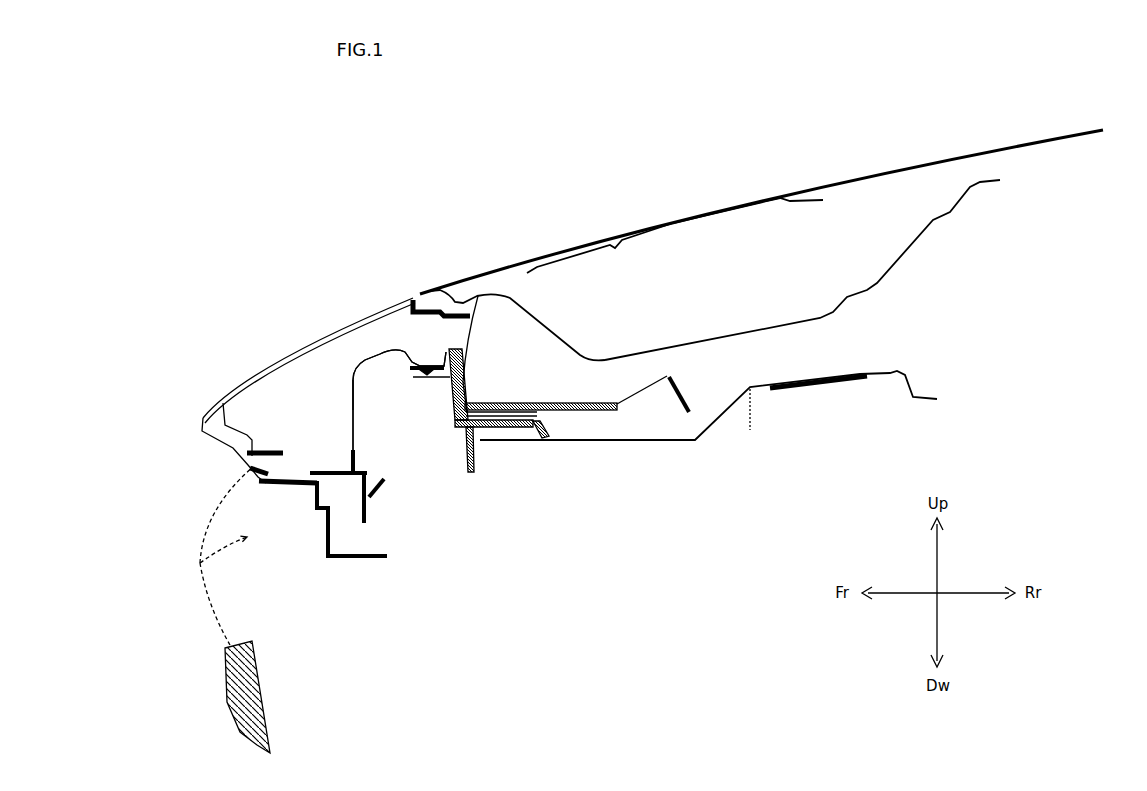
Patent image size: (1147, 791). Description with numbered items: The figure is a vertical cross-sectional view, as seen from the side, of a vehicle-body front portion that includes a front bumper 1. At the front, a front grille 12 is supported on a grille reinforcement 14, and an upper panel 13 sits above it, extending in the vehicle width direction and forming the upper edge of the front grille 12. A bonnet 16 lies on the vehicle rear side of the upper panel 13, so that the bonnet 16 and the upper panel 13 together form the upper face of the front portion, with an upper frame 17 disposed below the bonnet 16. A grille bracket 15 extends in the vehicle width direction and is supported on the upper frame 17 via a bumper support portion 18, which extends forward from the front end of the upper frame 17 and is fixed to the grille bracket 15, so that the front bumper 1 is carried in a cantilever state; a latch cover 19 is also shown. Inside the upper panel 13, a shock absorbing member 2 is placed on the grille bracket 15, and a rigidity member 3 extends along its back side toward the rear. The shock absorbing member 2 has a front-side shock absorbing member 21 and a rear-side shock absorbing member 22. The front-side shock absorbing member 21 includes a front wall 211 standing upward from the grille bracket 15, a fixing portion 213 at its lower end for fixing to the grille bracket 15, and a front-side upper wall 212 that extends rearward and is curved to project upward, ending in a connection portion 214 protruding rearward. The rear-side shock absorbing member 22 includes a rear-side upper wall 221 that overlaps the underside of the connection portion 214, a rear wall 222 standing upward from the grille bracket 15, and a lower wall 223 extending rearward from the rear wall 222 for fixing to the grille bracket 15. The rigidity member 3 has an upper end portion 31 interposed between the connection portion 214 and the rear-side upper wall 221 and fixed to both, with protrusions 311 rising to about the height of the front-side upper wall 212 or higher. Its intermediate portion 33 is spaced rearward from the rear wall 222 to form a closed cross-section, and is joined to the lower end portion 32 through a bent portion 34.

The front bumper 1 is at (562, 536).
The shock absorbing member 2 is at (368, 342).
The rigidity member 3 is at (510, 300).
The front grille 12 is at (217, 610).
The upper panel 13 is at (300, 347).
The grille reinforcement 14 is at (358, 558).
The grille bracket 15 is at (392, 497).
The bonnet 16 is at (700, 207).
The upper frame 17 is at (890, 368).
The bumper support portion 18 is at (620, 442).
The latch cover 19 is at (683, 381).
The front-side shock absorbing member 21 is at (357, 440).
The front wall 211 is at (347, 397).
The front-side upper wall 212 is at (357, 360).
The fixing portion 213 is at (338, 463).
The connection portion 214 is at (413, 355).
The rear-side shock absorbing member 22 is at (452, 400).
The rear-side upper wall 221 is at (420, 377).
The rear wall 222 is at (467, 387).
The lower wall 223 is at (528, 428).
The upper end portion 31 is at (438, 364).
The protrusions 311 is at (457, 320).
The lower end portion 32 is at (474, 343).
The intermediate portion 33 is at (533, 403).
The bent portion 34 is at (477, 395).